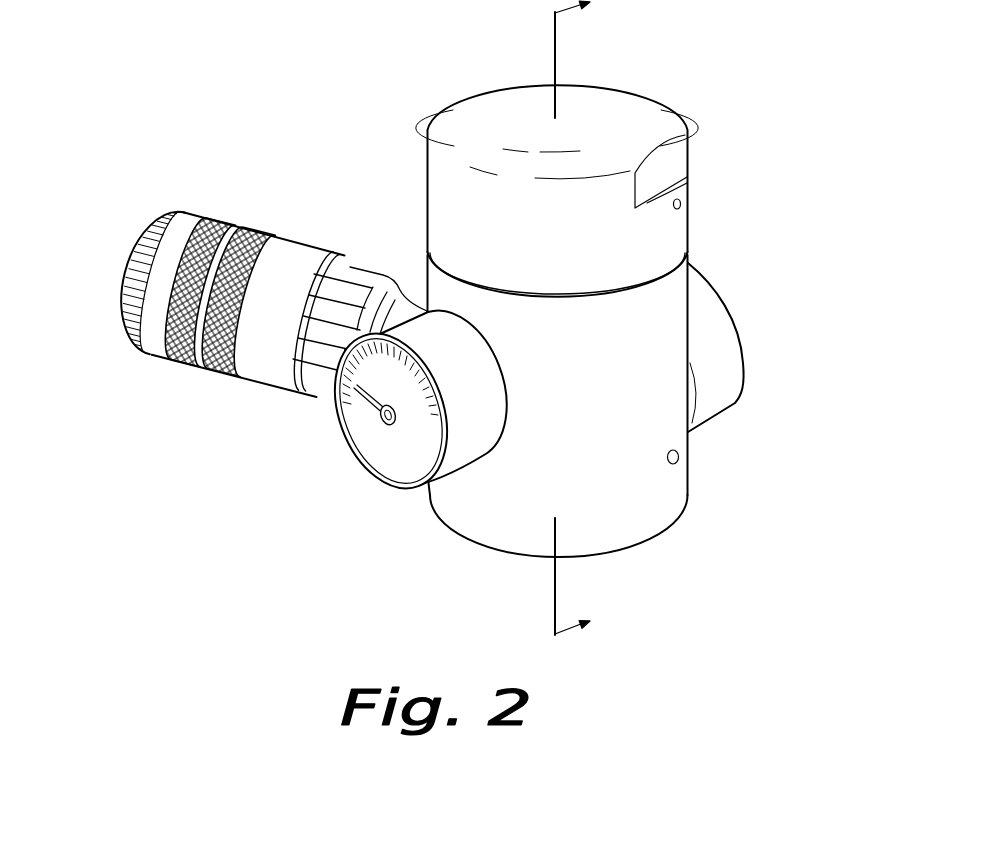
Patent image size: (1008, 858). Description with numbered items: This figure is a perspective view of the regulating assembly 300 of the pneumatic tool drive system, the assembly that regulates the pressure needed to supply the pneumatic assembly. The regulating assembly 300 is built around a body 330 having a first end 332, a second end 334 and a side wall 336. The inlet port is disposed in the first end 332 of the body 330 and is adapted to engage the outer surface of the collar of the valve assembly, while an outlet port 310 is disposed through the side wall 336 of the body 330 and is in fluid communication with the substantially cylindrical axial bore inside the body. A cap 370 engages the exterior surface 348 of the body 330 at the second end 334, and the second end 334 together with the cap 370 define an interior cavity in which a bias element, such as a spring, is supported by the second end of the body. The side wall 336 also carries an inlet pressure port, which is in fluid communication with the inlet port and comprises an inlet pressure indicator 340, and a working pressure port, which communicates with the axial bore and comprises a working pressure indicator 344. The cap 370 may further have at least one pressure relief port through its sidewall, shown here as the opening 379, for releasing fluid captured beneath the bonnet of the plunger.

The regulating assembly 300 is at (454, 317).
The outlet port 310 is at (113, 321).
The body 330 is at (575, 425).
The first end 332 is at (653, 535).
The second end 334 is at (688, 263).
The side wall 336 is at (680, 457).
The inlet pressure indicator 340 is at (725, 350).
The working pressure indicator 344 is at (403, 458).
The exterior surface 348 is at (492, 512).
The cap 370 is at (427, 130).
The window in cap 379 is at (683, 201).